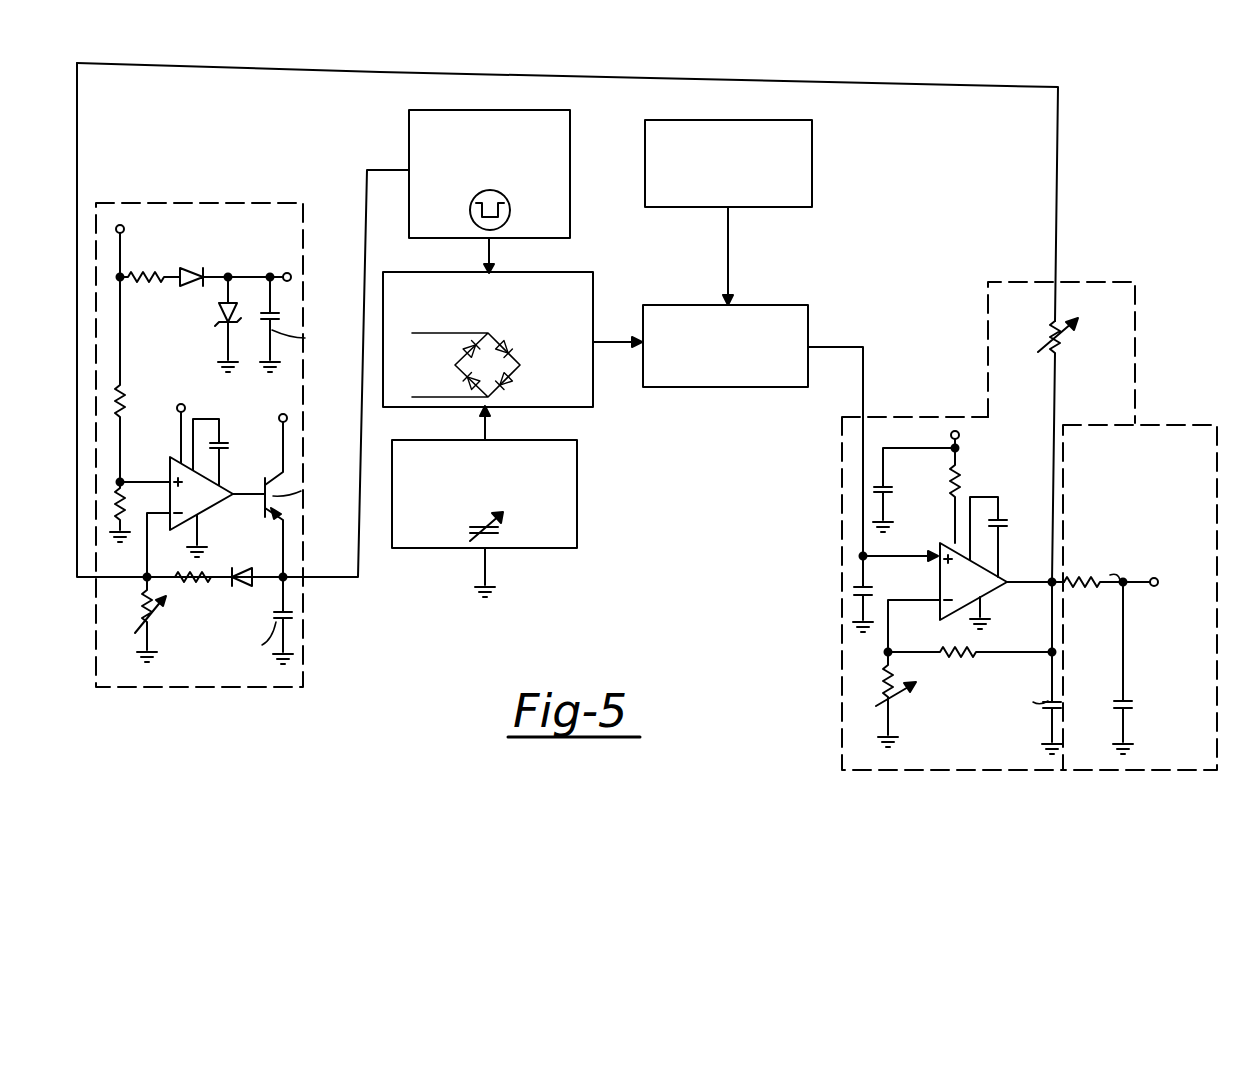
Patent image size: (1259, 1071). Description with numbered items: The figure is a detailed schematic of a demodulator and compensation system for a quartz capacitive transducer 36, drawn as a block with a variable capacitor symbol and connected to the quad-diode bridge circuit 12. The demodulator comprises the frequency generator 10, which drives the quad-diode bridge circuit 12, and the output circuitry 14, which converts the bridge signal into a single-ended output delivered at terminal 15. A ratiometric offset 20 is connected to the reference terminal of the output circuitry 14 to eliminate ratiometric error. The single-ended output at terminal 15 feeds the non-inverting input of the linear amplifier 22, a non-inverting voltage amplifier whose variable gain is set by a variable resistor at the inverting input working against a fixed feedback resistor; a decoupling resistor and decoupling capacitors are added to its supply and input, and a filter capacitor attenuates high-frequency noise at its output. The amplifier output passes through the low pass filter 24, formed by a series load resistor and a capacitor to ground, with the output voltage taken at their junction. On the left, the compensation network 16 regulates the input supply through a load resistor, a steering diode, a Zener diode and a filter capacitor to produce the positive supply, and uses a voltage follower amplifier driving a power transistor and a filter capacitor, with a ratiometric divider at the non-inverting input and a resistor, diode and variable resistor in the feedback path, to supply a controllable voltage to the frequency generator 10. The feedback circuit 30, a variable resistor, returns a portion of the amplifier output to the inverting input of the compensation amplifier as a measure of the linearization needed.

The frequency generator 10 is at (540, 110).
The quad-diode bridge circuit 12 is at (570, 272).
The output circuitry 14 is at (760, 305).
The terminal 15 is at (865, 387).
The compensation network 16 is at (232, 690).
The ratiometric offset 20 is at (812, 142).
The linear amplifier 22 is at (842, 633).
The output filter circuit 24 is at (1217, 600).
The feedback circuit 30 is at (1136, 350).
The quartz capacitive transducer 36 is at (577, 470).